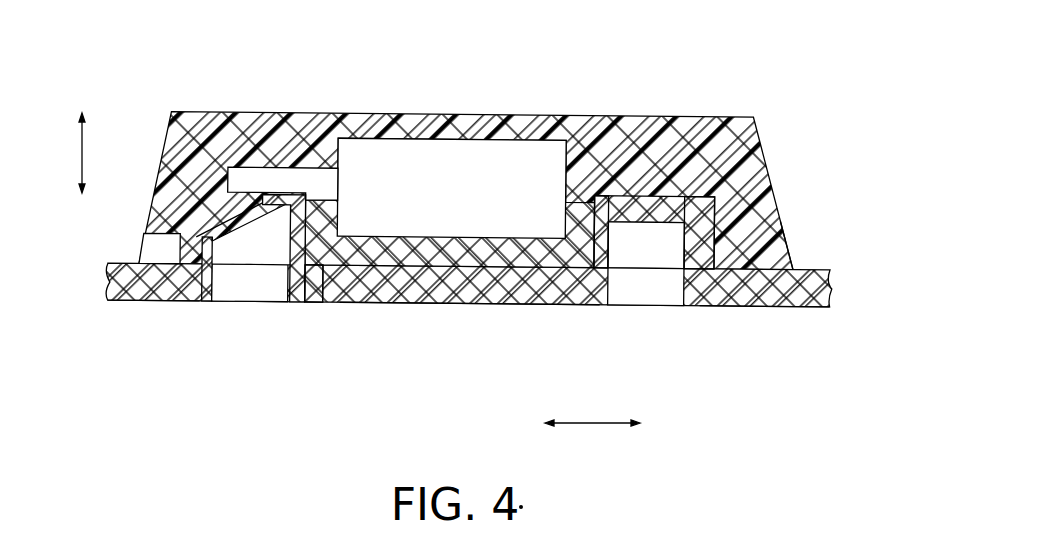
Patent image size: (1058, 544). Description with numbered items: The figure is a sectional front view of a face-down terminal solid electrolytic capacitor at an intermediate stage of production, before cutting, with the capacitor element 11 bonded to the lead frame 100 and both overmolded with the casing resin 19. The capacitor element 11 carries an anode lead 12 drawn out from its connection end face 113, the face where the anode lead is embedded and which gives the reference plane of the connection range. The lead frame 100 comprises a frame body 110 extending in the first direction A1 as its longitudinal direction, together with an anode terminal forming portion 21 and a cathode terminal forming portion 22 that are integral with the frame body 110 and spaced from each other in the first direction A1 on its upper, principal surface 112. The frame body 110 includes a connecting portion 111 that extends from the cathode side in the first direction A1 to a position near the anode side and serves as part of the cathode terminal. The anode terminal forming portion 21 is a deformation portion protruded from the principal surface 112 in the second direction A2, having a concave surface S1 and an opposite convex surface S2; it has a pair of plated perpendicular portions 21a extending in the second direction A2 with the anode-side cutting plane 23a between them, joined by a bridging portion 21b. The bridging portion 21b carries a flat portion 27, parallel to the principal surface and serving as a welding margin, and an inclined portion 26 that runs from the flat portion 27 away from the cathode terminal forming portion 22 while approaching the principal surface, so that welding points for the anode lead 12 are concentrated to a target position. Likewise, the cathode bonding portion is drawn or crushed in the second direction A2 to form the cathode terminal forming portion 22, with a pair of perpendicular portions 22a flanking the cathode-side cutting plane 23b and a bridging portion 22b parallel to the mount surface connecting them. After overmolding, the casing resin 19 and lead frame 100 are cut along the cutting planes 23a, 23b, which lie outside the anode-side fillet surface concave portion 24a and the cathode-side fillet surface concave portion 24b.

The capacitor element 11 is at (445, 160).
The anode lead 12 is at (317, 183).
The casing resin 19 is at (580, 165).
The anode terminal forming portion 21 is at (176, 236).
The perpendicular portions 21a is at (113, 300).
The bridging portion 21b is at (207, 285).
The cathode terminal forming portion 22 is at (694, 191).
The perpendicular portions 22a is at (600, 280).
The bridging portion 22b is at (708, 252).
The anode-side cutting plane 23a is at (278, 112).
The cathode-side cutting plane 23b is at (620, 113).
The anode-side fillet surface concave portion 24a is at (292, 308).
The cathode-side fillet surface concave portion 24b is at (598, 310).
The inclined portion 26 is at (202, 212).
The flat portion 27 is at (235, 292).
The lead frame 100 is at (837, 312).
The frame body 110 is at (793, 305).
The connecting portion 111 is at (463, 303).
The principal surface 112 is at (793, 252).
The connection end face 113 is at (310, 167).
The concave surface S1 is at (212, 228).
The convex surface S2 is at (217, 300).
The first direction A1 is at (597, 424).
The second direction A2 is at (81, 153).